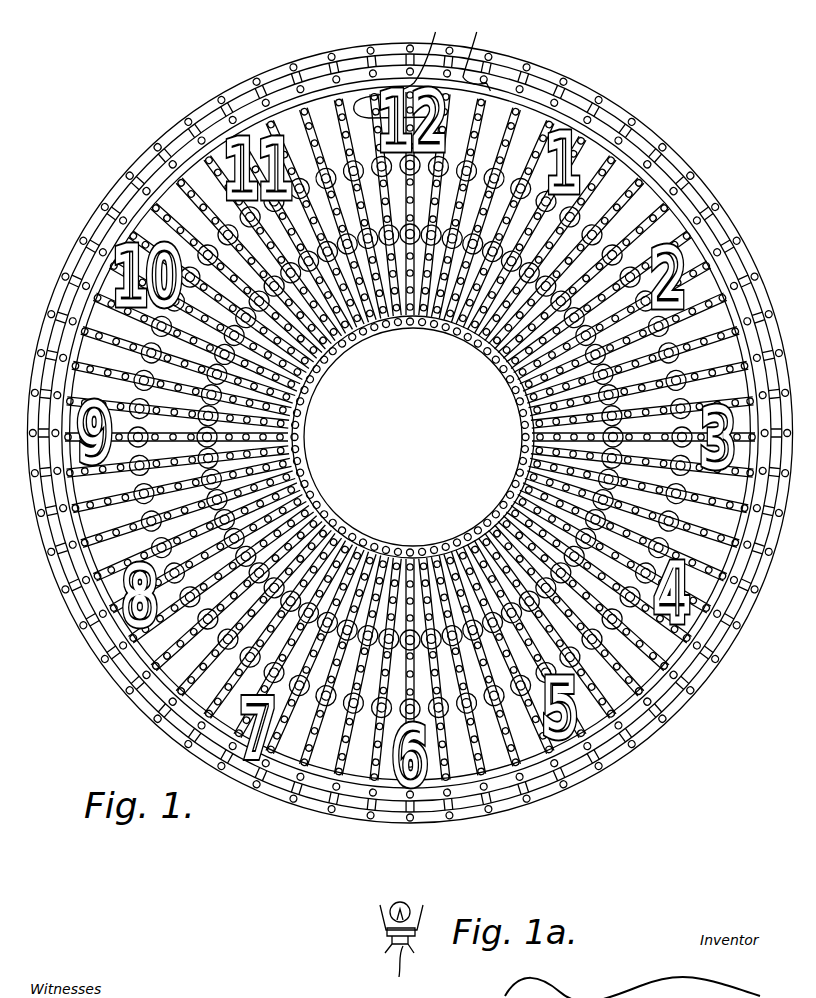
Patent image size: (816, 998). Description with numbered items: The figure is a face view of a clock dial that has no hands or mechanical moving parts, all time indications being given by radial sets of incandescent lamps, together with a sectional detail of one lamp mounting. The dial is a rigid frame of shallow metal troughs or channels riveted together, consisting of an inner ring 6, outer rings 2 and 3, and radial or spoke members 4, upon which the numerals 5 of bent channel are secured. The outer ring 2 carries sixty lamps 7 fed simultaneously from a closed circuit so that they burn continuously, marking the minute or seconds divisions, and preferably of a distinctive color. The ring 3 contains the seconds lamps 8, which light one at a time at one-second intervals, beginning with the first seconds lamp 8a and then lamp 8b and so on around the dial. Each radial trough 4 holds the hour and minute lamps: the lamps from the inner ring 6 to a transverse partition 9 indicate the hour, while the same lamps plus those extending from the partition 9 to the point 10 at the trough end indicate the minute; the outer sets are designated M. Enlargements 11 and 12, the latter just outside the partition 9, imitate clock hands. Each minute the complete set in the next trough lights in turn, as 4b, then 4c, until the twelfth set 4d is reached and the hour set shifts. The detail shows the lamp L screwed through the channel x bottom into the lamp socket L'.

In FIG. 1, the outer ring 2 is at (409, 433).
In FIG. 1, the ring 3 is at (410, 433).
In FIG. 1, the lamps 7 is at (410, 409).
In FIG. 1, the seconds lamps 8 is at (410, 432).
In FIG. 1, the first seconds lamp 8a is at (400, 63).
In FIG. 1, the seconds lamp 8b is at (476, 50).
In FIG. 1, the outer radial sets of lamps M is at (409, 419).
In FIG. 1, the radial troughs 4 is at (410, 437).
In FIG. 1, the radial trough 4b is at (443, 204).
In FIG. 1, the radial trough 4c is at (468, 205).
In FIG. 1, the twelfth set of minute lamps 4d is at (639, 379).
In FIG. 1, the point 10 is at (598, 294).
In FIG. 1, the enlargement 12 is at (410, 437).
In FIG. 1, the transverse partition 9 is at (410, 427).
In FIG. 1, the enlargement 11 is at (385, 413).
In FIG. 1, the numerals 5 is at (566, 181).
In FIG. 1, the inner ring 6 is at (413, 437).
In FIG. 1A, the lamp L is at (412, 898).
In FIG. 1A, the lamp socket L' is at (410, 970).
In FIG. 1A, the middle channel x is at (380, 919).